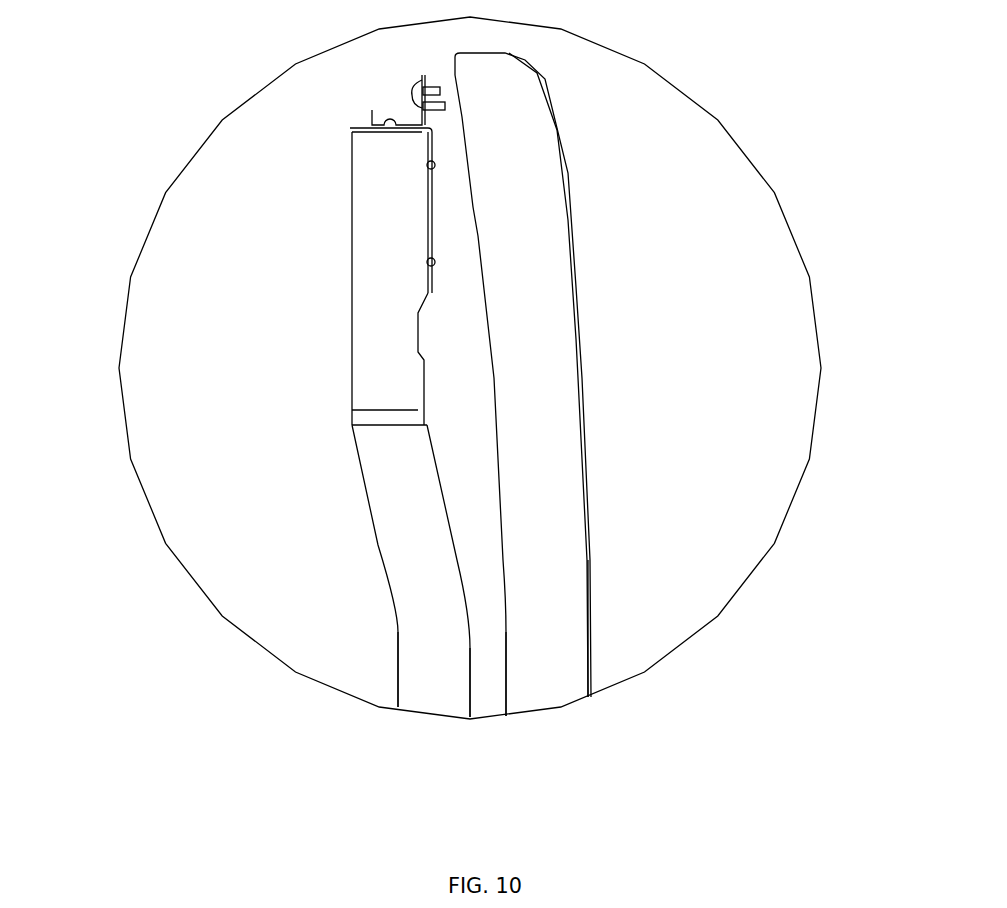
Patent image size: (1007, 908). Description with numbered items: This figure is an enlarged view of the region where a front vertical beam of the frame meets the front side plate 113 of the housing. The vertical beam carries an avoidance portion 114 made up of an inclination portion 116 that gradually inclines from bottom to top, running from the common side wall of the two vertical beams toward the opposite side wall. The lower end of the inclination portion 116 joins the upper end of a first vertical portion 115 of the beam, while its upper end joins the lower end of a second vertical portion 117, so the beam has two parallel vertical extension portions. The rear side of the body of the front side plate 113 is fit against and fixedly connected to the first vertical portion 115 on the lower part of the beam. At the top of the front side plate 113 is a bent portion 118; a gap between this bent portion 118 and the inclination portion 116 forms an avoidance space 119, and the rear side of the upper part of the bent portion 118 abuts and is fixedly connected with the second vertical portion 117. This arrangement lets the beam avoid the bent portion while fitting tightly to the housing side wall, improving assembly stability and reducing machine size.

The front side plate 113 is at (545, 608).
The avoidance portion 114 is at (399, 500).
The first vertical portion 115 is at (431, 654).
The inclination portion 116 is at (399, 532).
The second vertical portion 117 is at (362, 197).
The bent portion 118 is at (530, 345).
The avoidance space 119 is at (474, 431).